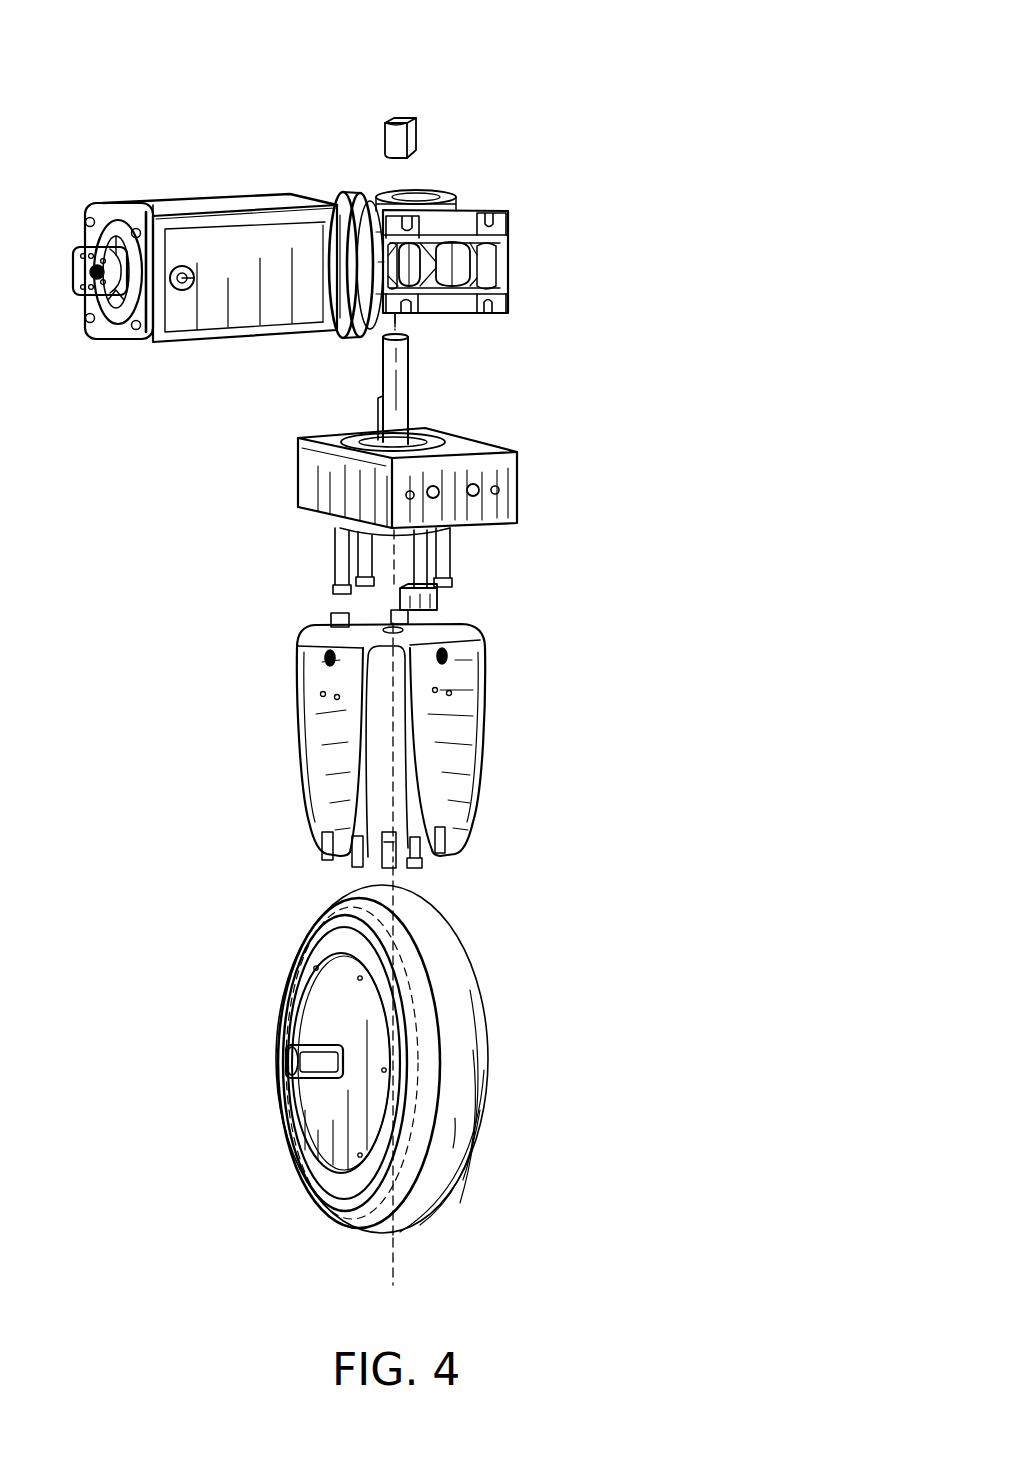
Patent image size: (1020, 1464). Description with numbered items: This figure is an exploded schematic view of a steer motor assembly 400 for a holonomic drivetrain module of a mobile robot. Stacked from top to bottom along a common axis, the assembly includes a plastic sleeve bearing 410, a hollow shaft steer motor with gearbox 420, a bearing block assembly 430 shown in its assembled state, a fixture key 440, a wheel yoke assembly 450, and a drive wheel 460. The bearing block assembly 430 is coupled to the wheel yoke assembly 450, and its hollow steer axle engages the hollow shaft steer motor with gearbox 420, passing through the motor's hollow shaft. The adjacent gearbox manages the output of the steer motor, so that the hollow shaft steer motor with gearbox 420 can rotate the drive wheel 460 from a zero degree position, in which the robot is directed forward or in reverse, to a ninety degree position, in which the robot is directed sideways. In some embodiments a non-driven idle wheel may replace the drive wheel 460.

The steer motor assembly 400 is at (822, 50).
The plastic sleeve bearing 410 is at (442, 122).
The hollow shaft steer motor with gearbox 420 is at (522, 228).
The bearing block assembly 430 is at (535, 462).
The fixture key 440 is at (438, 607).
The wheel yoke assembly 450 is at (497, 710).
The drive wheel 460 is at (493, 972).